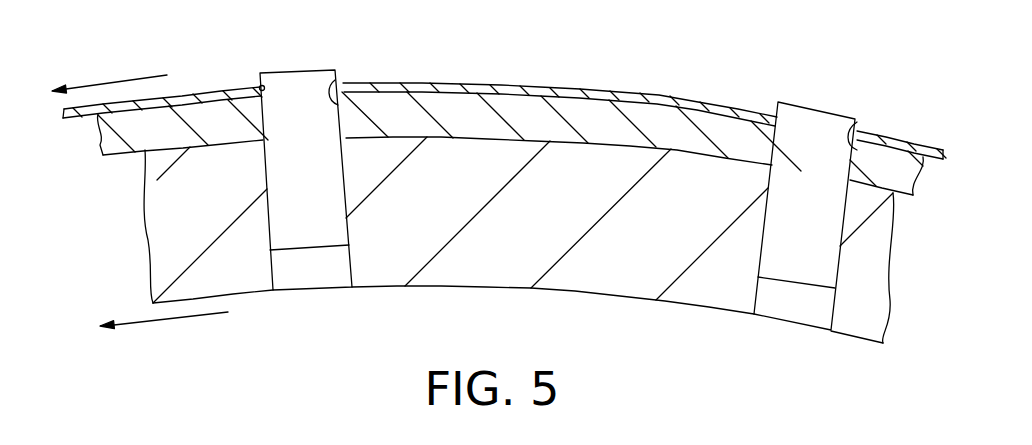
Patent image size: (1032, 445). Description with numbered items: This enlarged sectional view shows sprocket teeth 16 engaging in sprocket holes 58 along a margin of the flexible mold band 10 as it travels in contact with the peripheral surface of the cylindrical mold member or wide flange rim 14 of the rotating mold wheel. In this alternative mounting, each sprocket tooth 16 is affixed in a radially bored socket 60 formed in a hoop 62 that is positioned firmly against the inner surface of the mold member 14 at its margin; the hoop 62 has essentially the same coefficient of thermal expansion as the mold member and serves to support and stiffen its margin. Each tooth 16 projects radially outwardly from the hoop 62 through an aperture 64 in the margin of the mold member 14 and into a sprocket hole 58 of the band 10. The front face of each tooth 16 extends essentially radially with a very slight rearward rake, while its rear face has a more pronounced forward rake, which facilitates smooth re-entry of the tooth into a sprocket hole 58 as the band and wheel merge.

The flexible mold band 10 is at (463, 80).
The wide flange rim 14 is at (588, 102).
The sprocket teeth 16 is at (300, 70).
The sprocket holes 58 is at (258, 87).
The radially bored sockets 60 is at (350, 274).
The hoops 62 is at (507, 286).
The apertures 64 is at (335, 80).